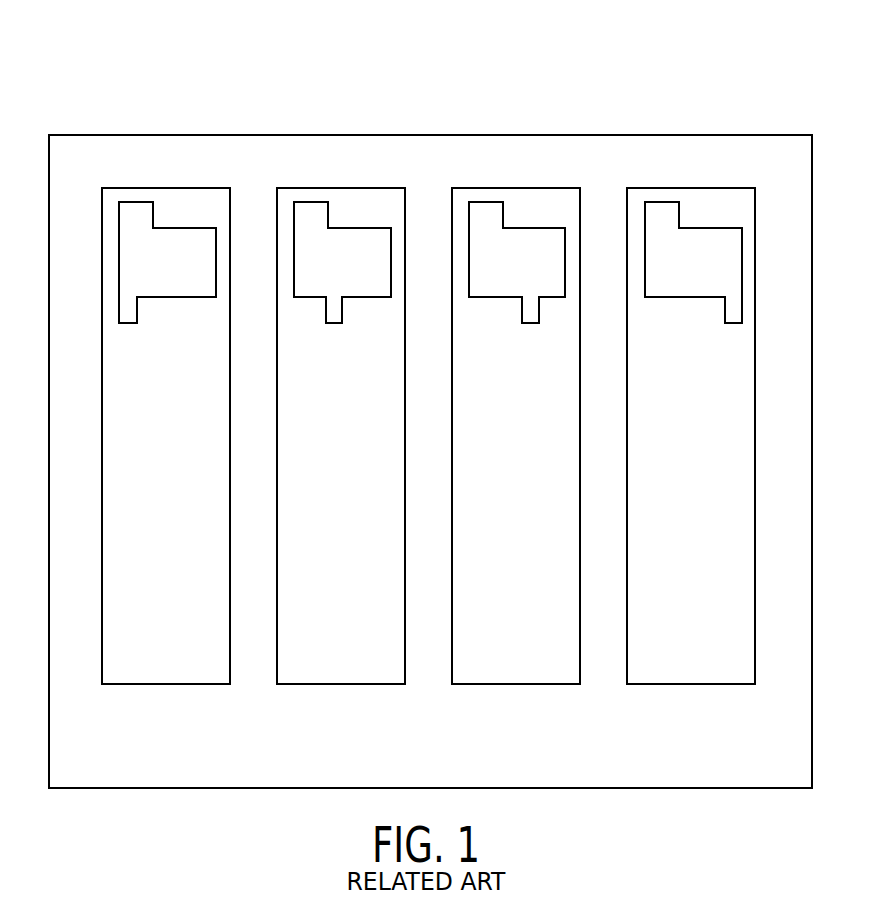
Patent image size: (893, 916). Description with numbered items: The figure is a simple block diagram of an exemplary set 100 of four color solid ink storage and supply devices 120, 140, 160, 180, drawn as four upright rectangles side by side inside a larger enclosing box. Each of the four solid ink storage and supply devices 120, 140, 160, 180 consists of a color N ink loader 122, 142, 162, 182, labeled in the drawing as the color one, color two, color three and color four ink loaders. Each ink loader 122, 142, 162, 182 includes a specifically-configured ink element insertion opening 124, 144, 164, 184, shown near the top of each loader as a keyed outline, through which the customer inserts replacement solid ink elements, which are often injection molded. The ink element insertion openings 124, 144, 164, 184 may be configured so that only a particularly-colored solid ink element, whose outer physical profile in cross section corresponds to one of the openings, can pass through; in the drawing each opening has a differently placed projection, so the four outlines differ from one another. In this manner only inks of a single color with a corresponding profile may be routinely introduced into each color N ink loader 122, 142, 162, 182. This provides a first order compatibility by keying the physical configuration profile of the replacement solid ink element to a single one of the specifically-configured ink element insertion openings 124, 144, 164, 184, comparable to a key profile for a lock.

The set of four color solid ink storage and supply devices 100 is at (88, 79).
The solid ink storage and supply device 120 is at (139, 188).
The color N ink loader 122 is at (167, 684).
The ink element insertion opening 124 is at (186, 228).
The solid ink storage and supply device 140 is at (314, 188).
The color N ink loader 142 is at (342, 684).
The ink element insertion opening 144 is at (361, 228).
The solid ink storage and supply device 160 is at (489, 188).
The color N ink loader 162 is at (517, 684).
The ink element insertion opening 164 is at (536, 228).
The solid ink storage and supply device 180 is at (653, 188).
The color N ink loader 182 is at (692, 684).
The ink element insertion opening 184 is at (713, 228).